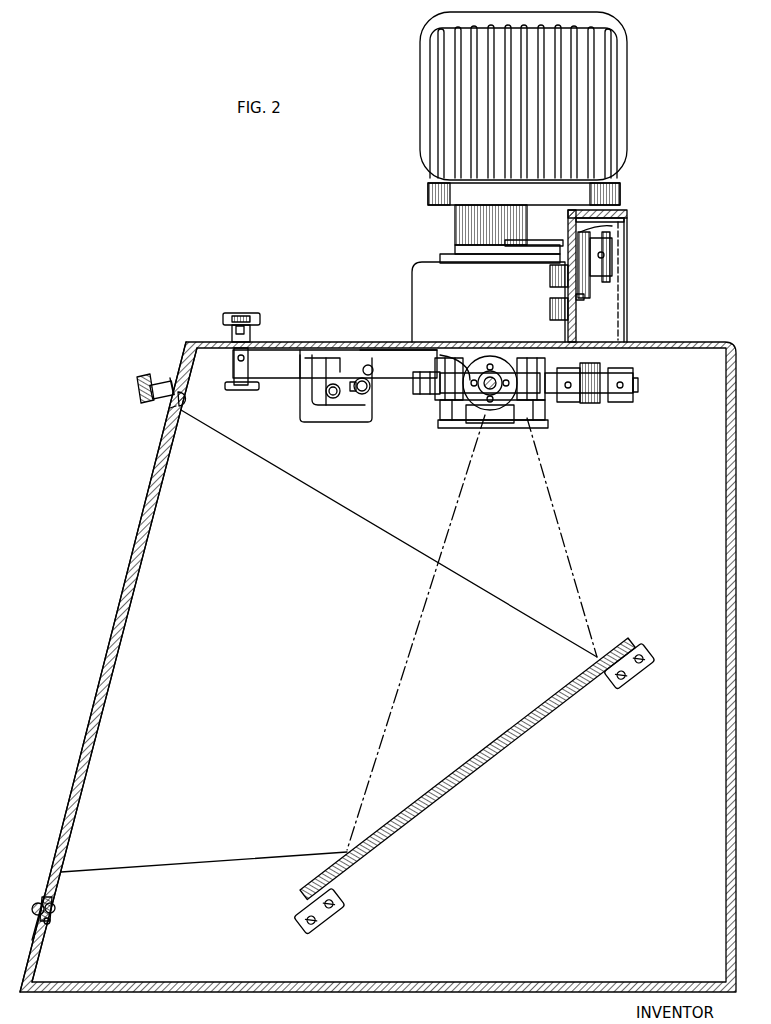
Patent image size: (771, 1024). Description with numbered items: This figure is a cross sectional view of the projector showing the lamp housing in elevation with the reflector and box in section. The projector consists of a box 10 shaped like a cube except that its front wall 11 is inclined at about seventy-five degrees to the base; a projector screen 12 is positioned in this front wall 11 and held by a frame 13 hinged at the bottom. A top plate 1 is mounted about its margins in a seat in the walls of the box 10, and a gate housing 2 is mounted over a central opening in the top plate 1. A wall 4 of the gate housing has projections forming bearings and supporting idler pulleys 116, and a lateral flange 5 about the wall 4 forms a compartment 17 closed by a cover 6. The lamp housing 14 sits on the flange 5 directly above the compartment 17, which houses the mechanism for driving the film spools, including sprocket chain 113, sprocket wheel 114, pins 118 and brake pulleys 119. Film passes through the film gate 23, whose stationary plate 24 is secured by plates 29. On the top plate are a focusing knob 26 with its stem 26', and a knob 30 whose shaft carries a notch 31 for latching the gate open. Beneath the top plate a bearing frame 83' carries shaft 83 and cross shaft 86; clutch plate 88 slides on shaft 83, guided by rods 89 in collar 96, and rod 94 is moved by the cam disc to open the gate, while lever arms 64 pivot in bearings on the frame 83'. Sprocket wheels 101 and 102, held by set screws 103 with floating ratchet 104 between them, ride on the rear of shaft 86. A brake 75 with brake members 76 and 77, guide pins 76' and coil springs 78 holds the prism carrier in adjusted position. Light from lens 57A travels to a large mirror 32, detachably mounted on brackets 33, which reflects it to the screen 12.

The top plate 1 is at (306, 348).
The gate housing 2 is at (412, 300).
The wall 4 is at (562, 288).
The lateral flange 5 is at (574, 210).
The cover 6 is at (628, 252).
The box 10 is at (128, 990).
The front wall 11 is at (42, 945).
The projector screen 12 is at (130, 548).
The frame 13 is at (42, 905).
The lamp housing 14 is at (614, 90).
The compartment 17 is at (630, 300).
The film gate 23 is at (449, 242).
The stationary fixed plate 24 is at (498, 255).
The focusing knob 26 is at (258, 309).
The clamp stem 26' is at (240, 386).
The plates 29 is at (528, 242).
The third knob 30 is at (242, 313).
The notch 31 is at (250, 330).
The mirror 32 is at (480, 778).
The brackets 33 is at (336, 910).
The lens 57A is at (495, 428).
The lever arms 64 is at (546, 366).
The brake 75 is at (358, 421).
The brake member 76 is at (306, 381).
The guide pins 76' is at (370, 413).
The brake member 77 is at (364, 406).
The coil springs 78 is at (332, 396).
The shaft 83 is at (507, 437).
The bearing frame 83' is at (437, 355).
The cross shaft 86 is at (446, 396).
The clutch plate 88 is at (485, 360).
The rods 89 is at (492, 370).
The rod 94 is at (457, 360).
The collar 96 is at (508, 372).
The sprocket wheel 101 is at (570, 404).
The sprocket wheel 102 is at (638, 395).
The set screws 103 is at (621, 370).
The floating ratchet 104 is at (598, 400).
The sprocket chain 113 is at (612, 322).
The sprocket wheel 114 is at (612, 240).
The idler pulleys 116 is at (620, 212).
The pins 118 is at (585, 297).
The brake pulleys 119 is at (620, 228).